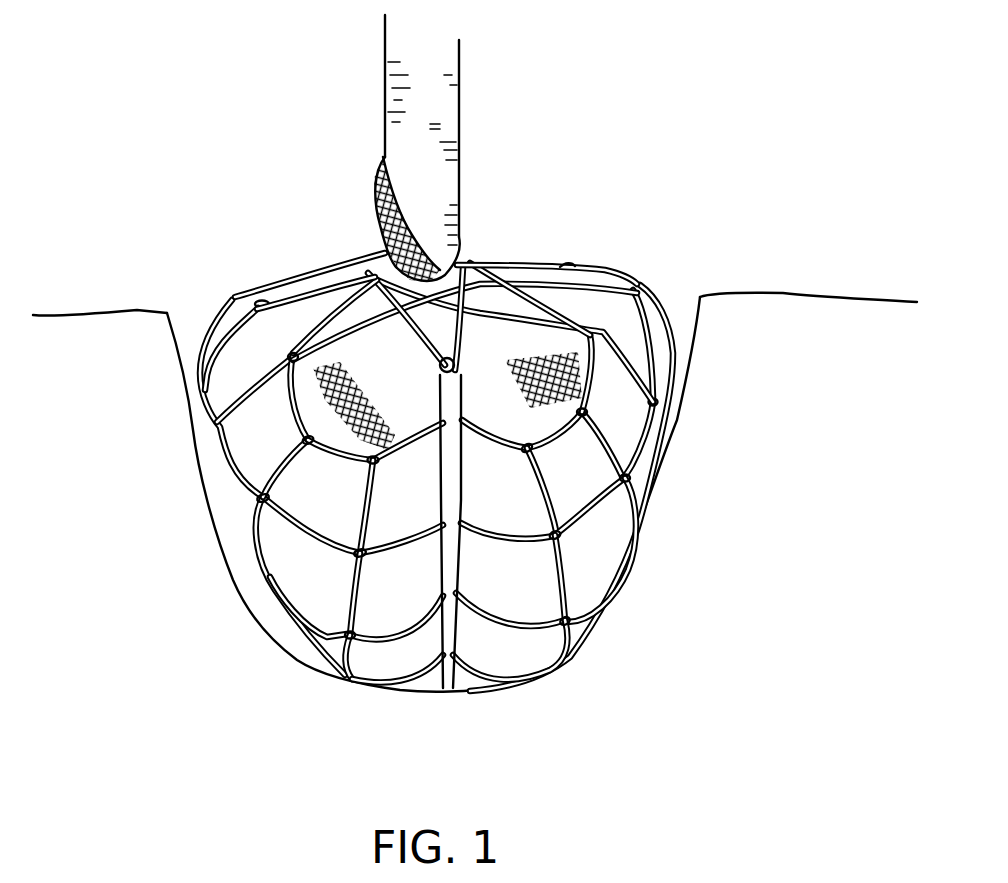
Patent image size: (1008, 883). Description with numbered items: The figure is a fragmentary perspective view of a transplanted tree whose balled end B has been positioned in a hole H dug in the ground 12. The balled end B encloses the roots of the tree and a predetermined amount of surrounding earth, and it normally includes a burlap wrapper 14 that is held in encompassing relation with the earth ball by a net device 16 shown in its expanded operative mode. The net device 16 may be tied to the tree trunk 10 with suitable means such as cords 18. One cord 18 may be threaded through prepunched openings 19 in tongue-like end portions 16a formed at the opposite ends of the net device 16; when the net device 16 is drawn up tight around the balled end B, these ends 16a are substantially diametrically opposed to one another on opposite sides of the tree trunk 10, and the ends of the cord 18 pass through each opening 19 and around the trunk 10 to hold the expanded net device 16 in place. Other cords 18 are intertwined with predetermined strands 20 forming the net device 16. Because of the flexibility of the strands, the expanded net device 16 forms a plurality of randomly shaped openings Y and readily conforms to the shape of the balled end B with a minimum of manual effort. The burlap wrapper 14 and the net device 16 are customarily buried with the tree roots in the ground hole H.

The tree trunk 10 is at (466, 126).
The ground 12 is at (868, 294).
The burlap wrapper 14 is at (387, 207).
The net device 16 is at (222, 290).
The tongue-like end portions 16a is at (453, 393).
The cords 18 is at (300, 277).
The prepunched openings 19 is at (438, 365).
The predetermined strands 20 is at (635, 322).
The balled end B is at (640, 264).
The hole H is at (648, 470).
The randomly shaped openings Y is at (268, 447).